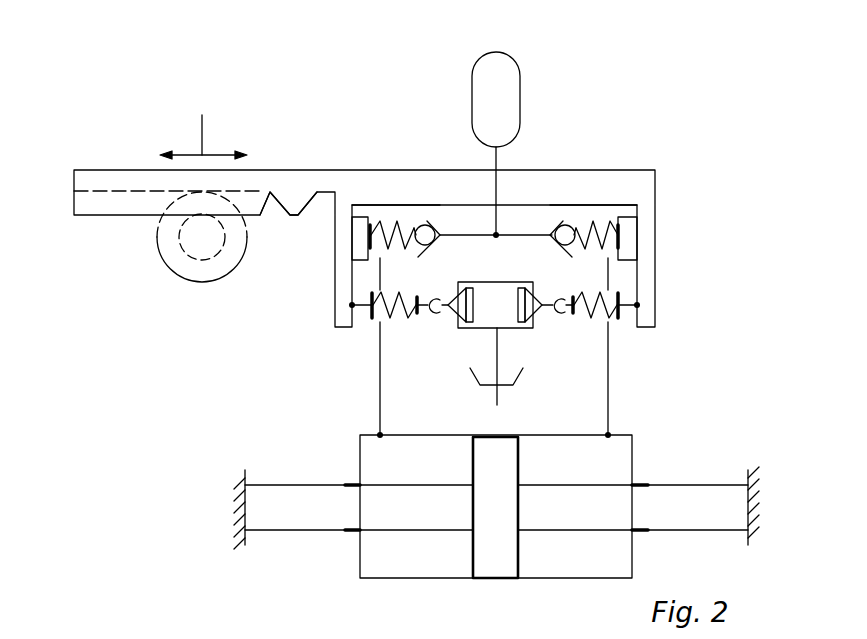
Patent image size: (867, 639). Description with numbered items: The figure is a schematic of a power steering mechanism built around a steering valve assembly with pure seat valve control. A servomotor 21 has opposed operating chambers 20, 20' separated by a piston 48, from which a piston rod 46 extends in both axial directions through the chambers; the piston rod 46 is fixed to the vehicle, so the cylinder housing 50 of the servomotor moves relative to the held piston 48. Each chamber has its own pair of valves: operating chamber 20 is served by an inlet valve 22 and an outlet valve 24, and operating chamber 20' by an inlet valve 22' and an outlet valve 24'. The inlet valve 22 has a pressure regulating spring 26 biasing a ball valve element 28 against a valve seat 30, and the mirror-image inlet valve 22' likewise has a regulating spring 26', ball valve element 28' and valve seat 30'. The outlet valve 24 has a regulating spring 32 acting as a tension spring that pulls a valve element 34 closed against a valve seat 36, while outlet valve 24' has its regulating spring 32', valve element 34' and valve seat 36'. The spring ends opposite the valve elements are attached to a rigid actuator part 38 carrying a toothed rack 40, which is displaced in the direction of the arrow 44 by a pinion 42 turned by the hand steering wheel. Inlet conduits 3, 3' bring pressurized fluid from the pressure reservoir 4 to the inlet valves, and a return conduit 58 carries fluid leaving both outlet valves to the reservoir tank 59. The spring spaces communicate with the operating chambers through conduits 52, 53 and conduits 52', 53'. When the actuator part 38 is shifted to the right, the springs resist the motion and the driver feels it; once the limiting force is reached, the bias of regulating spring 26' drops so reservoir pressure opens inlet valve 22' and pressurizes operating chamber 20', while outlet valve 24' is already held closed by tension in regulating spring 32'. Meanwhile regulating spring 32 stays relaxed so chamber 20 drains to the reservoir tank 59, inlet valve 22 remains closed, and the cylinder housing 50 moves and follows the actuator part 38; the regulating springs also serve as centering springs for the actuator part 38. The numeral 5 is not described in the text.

The inlet conduit 3 is at (434, 249).
The inlet conduit 3' is at (554, 249).
The pressure reservoir 4 is at (502, 78).
The pressure line 5 is at (495, 292).
The operating chamber 20 is at (409, 558).
The operating chamber 20' is at (583, 558).
The servomotor 21 is at (497, 580).
The inlet valve 22 is at (396, 155).
The inlet valve 22' is at (614, 153).
The outlet valve 24 is at (393, 348).
The outlet valve 24' is at (592, 348).
The pressure regulating spring 26 is at (371, 171).
The pressure regulating spring 26' is at (647, 171).
The ball valve element 28 is at (427, 169).
The ball valve element 28' is at (599, 160).
The valve seat 30 is at (444, 175).
The valve seat 30' is at (573, 175).
The regulating spring 32 is at (328, 338).
The regulating spring 32' is at (651, 333).
The valve element 34 is at (453, 346).
The valve element 34' is at (538, 346).
The valve seat 36 is at (432, 339).
The valve seat 36' is at (559, 339).
The rigid actuator part 38 is at (298, 200).
The toothed rack 40 is at (278, 203).
The pinion 42 is at (180, 260).
The arrow 44 is at (203, 126).
The piston rod 46 is at (287, 517).
The piston 48 is at (508, 558).
The cylinder housing 50 is at (442, 580).
The conduit 52 is at (312, 295).
The conduit 52' is at (670, 258).
The conduit 53 is at (311, 329).
The conduit 53' is at (667, 327).
The return conduit 58 is at (497, 345).
The reservoir tank 59 is at (496, 379).